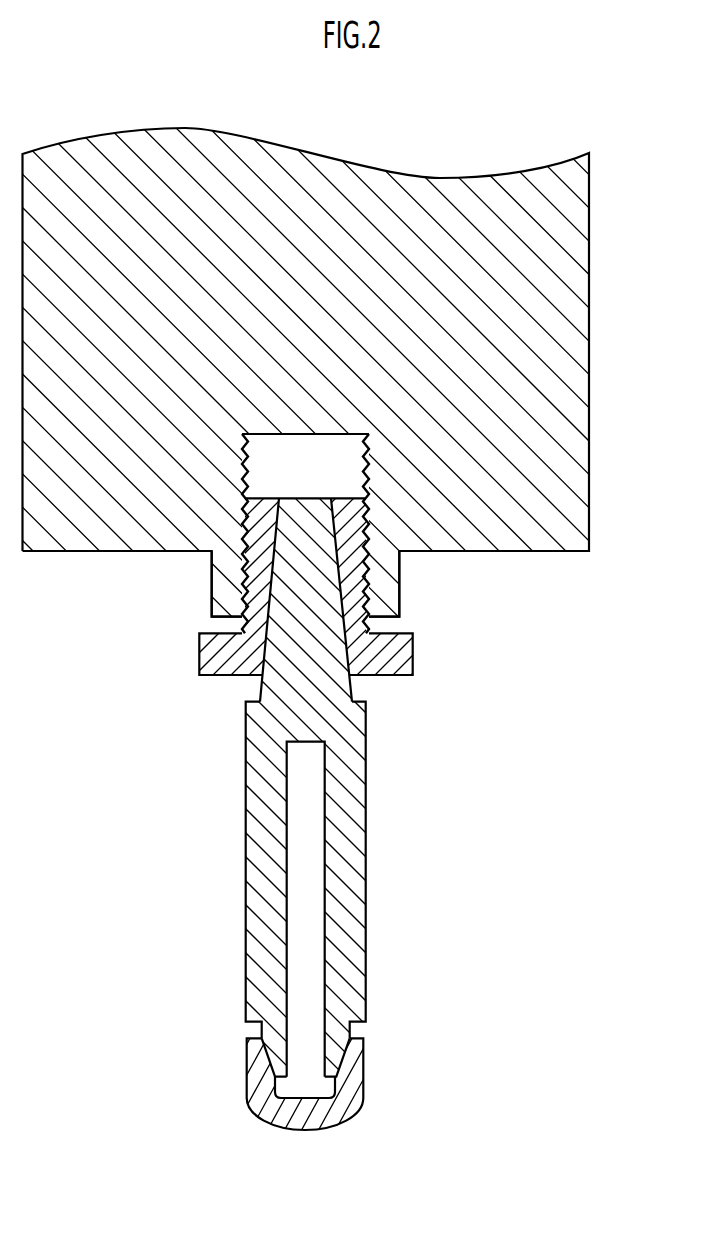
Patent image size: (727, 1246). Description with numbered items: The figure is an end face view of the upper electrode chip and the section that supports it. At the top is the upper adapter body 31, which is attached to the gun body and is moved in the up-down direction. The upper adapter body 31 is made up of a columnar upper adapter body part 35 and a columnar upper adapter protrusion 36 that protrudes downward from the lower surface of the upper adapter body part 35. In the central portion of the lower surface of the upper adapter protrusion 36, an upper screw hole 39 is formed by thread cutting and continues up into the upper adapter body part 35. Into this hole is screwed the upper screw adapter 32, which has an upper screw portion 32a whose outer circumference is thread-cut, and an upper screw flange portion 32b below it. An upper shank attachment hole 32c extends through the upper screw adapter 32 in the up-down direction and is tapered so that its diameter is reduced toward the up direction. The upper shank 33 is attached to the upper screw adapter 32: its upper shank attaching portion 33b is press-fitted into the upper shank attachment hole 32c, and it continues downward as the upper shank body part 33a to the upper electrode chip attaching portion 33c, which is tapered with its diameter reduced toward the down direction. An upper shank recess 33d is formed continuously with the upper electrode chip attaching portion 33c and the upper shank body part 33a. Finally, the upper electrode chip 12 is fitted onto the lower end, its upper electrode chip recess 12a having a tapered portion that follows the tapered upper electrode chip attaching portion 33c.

The upper adapter body 31 is at (363, 379).
The upper adapter body part 35 is at (570, 346).
The upper adapter protrusion 36 is at (388, 577).
The upper screw hole 39 is at (243, 487).
The upper screw adapter 32 is at (310, 579).
The upper screw portion 32a is at (243, 627).
The upper screw flange portion 32b is at (225, 668).
The upper shank attachment hole 32c is at (322, 500).
The upper shank 33 is at (363, 784).
The upper shank body part 33a is at (347, 822).
The upper shank attaching portion 33b is at (300, 515).
The upper electrode chip attaching portion 33c is at (336, 1053).
The upper shank recess 33d is at (357, 1118).
The upper electrode chip 12 is at (297, 1121).
The upper electrode chip recess 12a is at (283, 1090).